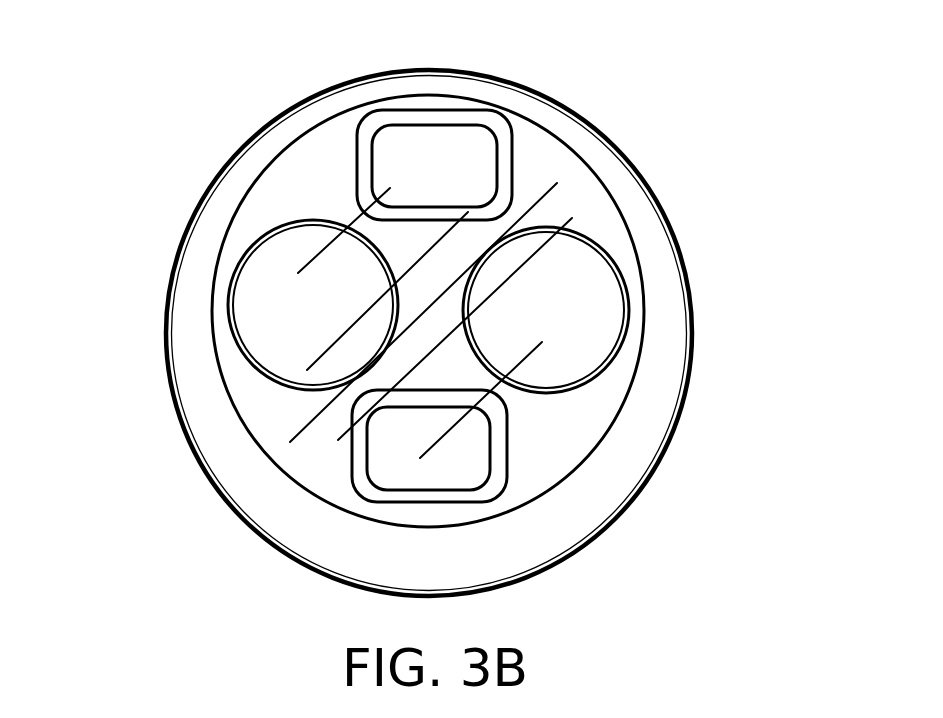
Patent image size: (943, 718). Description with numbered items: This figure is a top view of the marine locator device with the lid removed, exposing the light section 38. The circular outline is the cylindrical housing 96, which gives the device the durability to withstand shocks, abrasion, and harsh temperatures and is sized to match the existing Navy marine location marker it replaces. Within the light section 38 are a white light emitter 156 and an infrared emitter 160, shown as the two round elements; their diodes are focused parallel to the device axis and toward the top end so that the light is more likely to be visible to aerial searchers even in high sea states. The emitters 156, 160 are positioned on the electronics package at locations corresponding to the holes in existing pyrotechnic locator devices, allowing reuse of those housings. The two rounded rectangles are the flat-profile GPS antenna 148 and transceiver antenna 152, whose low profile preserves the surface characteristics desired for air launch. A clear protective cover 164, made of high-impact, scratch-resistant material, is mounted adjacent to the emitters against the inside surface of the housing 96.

The light section 38 is at (590, 86).
The housing 96 is at (688, 247).
The GPS antenna 148 is at (355, 158).
The transceiver antenna 152 is at (350, 465).
The white light emitter 156 is at (240, 345).
The infrared emitter 160 is at (595, 378).
The protective cover 164 is at (540, 205).